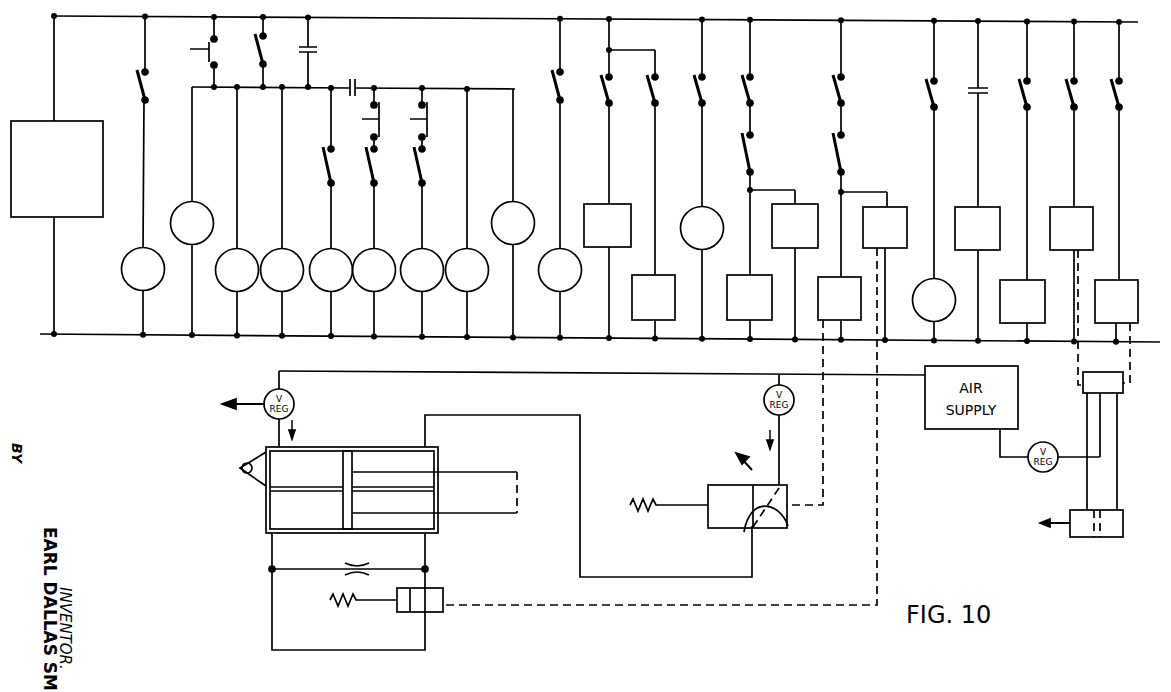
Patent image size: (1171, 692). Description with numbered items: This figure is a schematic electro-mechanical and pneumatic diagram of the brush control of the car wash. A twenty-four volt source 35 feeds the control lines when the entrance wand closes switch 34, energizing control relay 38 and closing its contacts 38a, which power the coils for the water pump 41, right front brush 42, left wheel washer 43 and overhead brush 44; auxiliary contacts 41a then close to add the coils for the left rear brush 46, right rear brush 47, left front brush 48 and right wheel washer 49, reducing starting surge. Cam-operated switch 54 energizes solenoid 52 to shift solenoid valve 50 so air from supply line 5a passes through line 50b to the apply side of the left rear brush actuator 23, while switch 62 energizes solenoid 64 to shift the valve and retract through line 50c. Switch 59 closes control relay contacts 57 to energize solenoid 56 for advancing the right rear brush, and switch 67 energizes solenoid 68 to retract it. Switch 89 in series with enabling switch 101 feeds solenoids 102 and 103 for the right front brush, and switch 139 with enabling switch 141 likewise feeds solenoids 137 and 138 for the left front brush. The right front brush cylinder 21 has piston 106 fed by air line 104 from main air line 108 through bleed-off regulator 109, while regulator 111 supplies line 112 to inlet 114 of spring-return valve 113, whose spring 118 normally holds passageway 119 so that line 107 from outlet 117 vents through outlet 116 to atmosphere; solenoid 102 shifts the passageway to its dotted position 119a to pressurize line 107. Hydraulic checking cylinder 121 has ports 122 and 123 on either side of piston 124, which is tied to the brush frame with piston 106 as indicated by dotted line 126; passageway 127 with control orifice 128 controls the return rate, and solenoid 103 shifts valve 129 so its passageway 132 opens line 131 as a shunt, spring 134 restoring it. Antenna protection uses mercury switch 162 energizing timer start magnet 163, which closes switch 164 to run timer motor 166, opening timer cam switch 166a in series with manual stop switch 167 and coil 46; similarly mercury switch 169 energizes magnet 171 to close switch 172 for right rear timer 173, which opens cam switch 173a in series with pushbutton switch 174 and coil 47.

The twenty-four volt source 35 is at (32, 121).
The switch 34 is at (137, 70).
The control relay 38 is at (152, 288).
The normally open contacts 38a is at (318, 52).
The auxiliary contacts 41a is at (356, 78).
The water pump coil 41 is at (192, 201).
The right front brush coil 42 is at (238, 248).
The left wheel washer motor coil 43 is at (283, 248).
The overhead brush coil 44 is at (332, 248).
The left rear brush coil 46 is at (375, 248).
The right rear brush coil 47 is at (423, 248).
The left front brush coil 48 is at (475, 290).
The right wheel washer brush coil 49 is at (517, 202).
The manual stop switch 167 is at (381, 118).
The pushbutton switch 174 is at (430, 120).
The timer cam switch 166a is at (378, 170).
The timer cam switch 173a is at (430, 171).
The switch 164 is at (552, 68).
The timer motor 166 is at (575, 290).
The mercury switch 162 is at (602, 72).
The timer starting magnet 163 is at (612, 204).
The mercury switch 169 is at (660, 72).
The timer start magnet 171 is at (664, 321).
The switch 172 is at (708, 78).
The right rear brush timer 173 is at (710, 246).
The enabling switch 141 is at (757, 95).
The switch 139 is at (757, 156).
The solenoid 137 is at (758, 321).
The solenoid 138 is at (805, 250).
The cam-operated switch 101 is at (850, 96).
The switch 89 is at (850, 158).
The solenoid 102 is at (843, 321).
The solenoid 103 is at (893, 250).
The cam-operated switch 59 is at (940, 95).
The control relay contacts 57 is at (984, 87).
The solenoid 56 is at (990, 252).
The cam-operated switch 67 is at (1033, 95).
The solenoid 68 is at (1046, 323).
The cam-operated switch 54 is at (1080, 95).
The solenoid 52 is at (1085, 252).
The cam-operated switch 62 is at (1125, 100).
The solenoid 64 is at (1128, 280).
The main air supply line 108 is at (609, 372).
The bleed-off regulator 109 is at (265, 392).
The air supply line 104 is at (275, 433).
The pneumatic actuating cylinder 21 is at (352, 482).
The piston 106 is at (351, 462).
The piston 124 is at (350, 535).
The dotted line 126 is at (519, 490).
The hydraulic checking cylinder 121 is at (266, 515).
The port 122 is at (268, 537).
The port 123 is at (430, 535).
The passageway 127 is at (420, 569).
The control orifice 128 is at (345, 574).
The solenoid actuated spring-return valve 129 is at (443, 612).
The spring 134 is at (345, 608).
The passageway 132 is at (415, 612).
The line 131 is at (357, 652).
The regulator 111 is at (764, 402).
The line 112 is at (783, 445).
The solenoid-operated spring-return valve 113 is at (755, 505).
The inlet 114 is at (784, 485).
The outlet to atmosphere 116 is at (753, 485).
The spring 118 is at (642, 512).
The passageway 119 is at (744, 530).
The valve port 119a is at (788, 522).
The outlet 117 is at (753, 528).
The air line 107 is at (705, 578).
The solenoid valve 50 is at (1083, 393).
The line 5a is at (1100, 430).
The line 50c is at (1087, 475).
The line 50b is at (1117, 493).
The pneumatic actuator 23 is at (1085, 530).